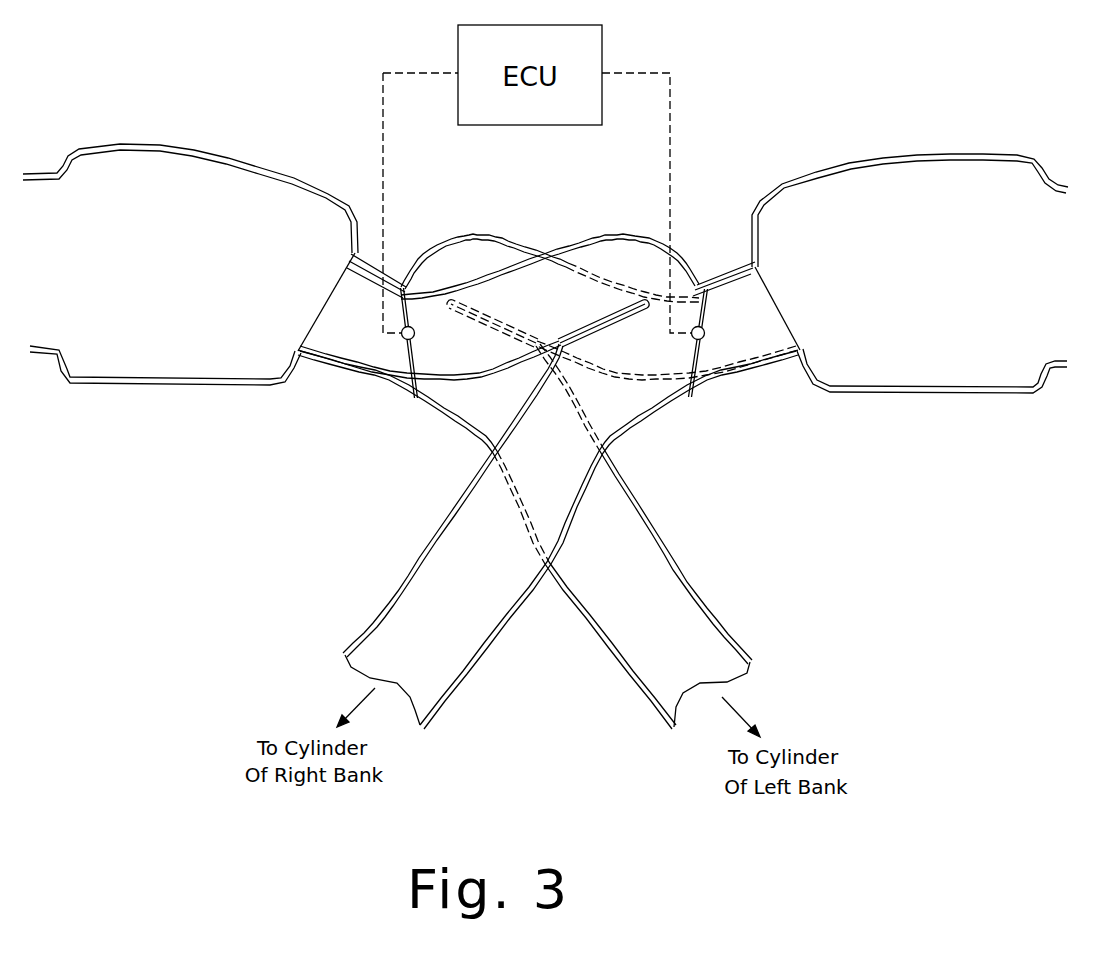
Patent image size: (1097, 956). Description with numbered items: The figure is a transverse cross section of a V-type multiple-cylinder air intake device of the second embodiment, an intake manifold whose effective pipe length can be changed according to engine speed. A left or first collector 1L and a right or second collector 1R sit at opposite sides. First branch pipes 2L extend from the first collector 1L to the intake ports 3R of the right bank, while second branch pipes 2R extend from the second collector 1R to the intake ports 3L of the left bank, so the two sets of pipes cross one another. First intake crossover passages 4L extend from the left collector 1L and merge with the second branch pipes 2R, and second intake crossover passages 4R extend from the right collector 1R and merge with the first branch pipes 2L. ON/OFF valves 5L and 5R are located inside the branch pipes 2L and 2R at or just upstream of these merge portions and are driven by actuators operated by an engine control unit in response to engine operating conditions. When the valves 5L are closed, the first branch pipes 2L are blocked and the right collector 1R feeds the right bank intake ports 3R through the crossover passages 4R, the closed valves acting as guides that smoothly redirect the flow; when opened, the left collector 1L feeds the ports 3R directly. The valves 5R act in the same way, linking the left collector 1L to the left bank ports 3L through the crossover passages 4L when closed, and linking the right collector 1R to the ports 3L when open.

The right or second collector 1R is at (290, 190).
The left or first collector 1L is at (837, 182).
The second branch pipes 2R is at (492, 403).
The first branch pipes 2L is at (747, 337).
The intake ports of the right bank 3R is at (446, 669).
The intake ports of the left bank 3L is at (644, 672).
The second intake crossover passages 4R is at (588, 260).
The first intake crossover passages 4L is at (463, 250).
The ON/OFF valves 5R is at (407, 358).
The ON/OFF valves 5L is at (730, 385).